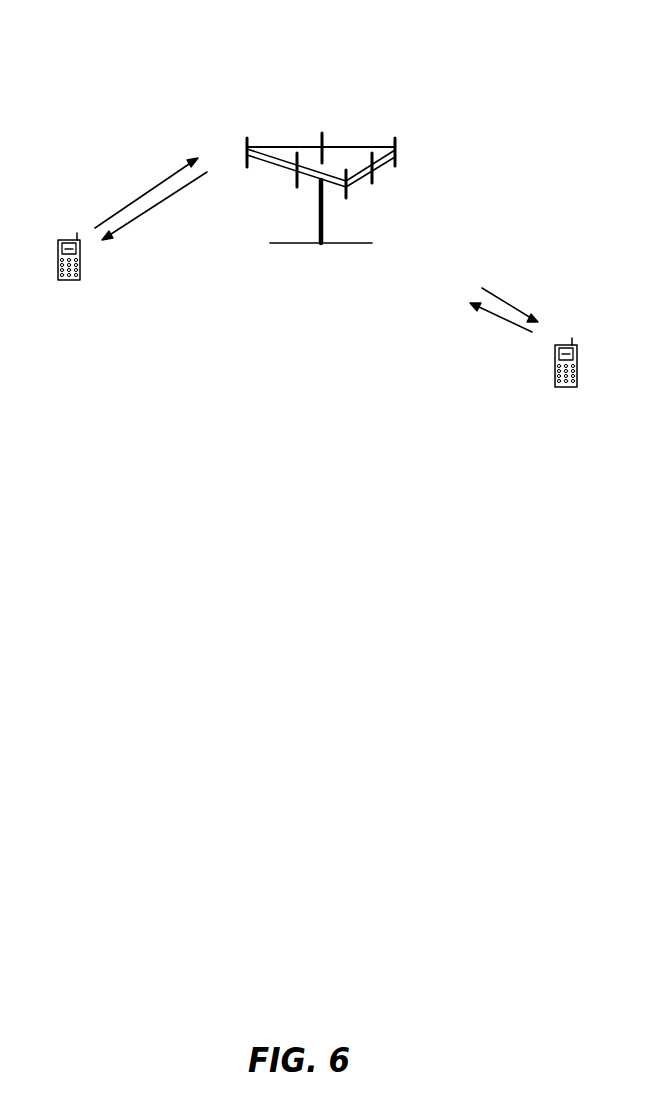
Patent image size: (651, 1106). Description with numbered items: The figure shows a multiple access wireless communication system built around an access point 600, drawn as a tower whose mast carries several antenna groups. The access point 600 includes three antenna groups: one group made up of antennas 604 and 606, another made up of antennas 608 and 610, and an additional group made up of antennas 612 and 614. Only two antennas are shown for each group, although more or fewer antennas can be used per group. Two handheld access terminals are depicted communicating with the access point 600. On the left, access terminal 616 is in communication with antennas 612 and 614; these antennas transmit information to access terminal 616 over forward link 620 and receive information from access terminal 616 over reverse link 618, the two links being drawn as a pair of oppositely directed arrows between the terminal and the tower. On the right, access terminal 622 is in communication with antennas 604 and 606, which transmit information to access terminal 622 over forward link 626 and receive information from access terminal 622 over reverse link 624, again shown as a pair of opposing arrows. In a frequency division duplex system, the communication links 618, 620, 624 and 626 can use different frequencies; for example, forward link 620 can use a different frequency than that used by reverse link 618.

The access point 600 is at (303, 243).
The antenna 604 is at (346, 197).
The antenna 606 is at (372, 182).
The antenna 608 is at (397, 163).
The antenna 610 is at (323, 135).
The antenna 612 is at (248, 147).
The antenna 614 is at (297, 187).
The access terminal 616 is at (66, 238).
The reverse link 618 is at (147, 193).
The forward link 620 is at (162, 201).
The access terminal 622 is at (569, 340).
The reverse link 624 is at (490, 316).
The forward link 626 is at (515, 306).